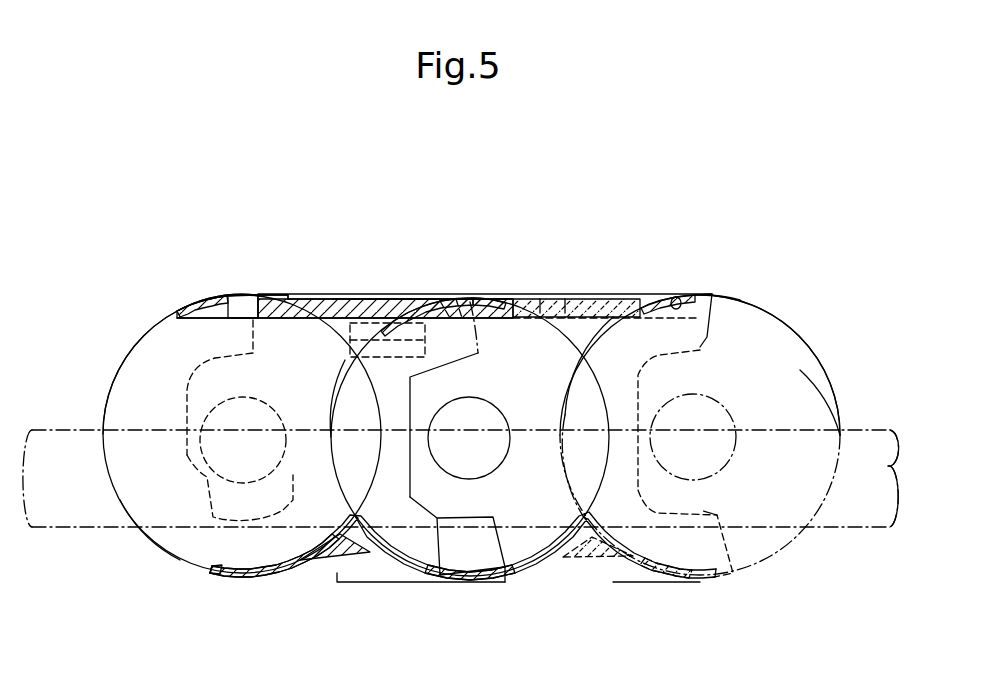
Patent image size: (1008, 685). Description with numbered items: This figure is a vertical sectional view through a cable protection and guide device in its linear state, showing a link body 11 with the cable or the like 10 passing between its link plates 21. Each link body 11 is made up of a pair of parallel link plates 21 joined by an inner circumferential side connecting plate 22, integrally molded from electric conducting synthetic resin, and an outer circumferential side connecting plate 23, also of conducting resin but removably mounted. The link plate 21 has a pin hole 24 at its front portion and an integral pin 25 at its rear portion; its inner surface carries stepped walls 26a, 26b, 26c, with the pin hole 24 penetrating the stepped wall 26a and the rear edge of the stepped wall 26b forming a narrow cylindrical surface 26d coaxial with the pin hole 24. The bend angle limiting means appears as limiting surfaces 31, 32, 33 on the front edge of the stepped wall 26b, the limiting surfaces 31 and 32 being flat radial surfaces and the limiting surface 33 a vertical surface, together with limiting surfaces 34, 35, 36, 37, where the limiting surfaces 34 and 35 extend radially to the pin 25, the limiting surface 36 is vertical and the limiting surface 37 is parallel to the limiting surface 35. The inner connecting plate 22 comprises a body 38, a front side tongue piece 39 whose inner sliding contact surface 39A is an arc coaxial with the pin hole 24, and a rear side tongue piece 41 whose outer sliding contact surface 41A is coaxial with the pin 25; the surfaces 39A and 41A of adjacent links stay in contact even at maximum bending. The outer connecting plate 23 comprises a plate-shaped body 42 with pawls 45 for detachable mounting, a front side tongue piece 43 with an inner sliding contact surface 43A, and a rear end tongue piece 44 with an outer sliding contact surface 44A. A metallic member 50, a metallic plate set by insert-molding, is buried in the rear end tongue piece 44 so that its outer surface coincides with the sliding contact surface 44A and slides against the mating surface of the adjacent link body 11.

The cable or the like 10 is at (80, 427).
The link body 11 is at (133, 349).
The link plate 21 is at (147, 540).
The inner circumferential side connecting plate 22 is at (333, 597).
The outer circumferential side connecting plate 23 is at (336, 300).
The pin hole 24 is at (480, 460).
The pin 25 is at (256, 398).
The stepped wall 26a is at (822, 390).
The stepped wall 26b is at (718, 300).
The stepped wall 26c is at (173, 540).
The narrow cylindrical surface 26d is at (580, 395).
The limiting surface 31 is at (497, 318).
The limiting surface 32 is at (547, 557).
The limiting surface 33 is at (410, 410).
The limiting surface 34 is at (233, 307).
The limiting surface 35 is at (293, 505).
The limiting surface 36 is at (186, 407).
The limiting surface 37 is at (197, 478).
The body 38 is at (360, 548).
The front side tongue piece 39 is at (450, 581).
The sliding contact surface 39A is at (418, 560).
The rear side tongue piece 41 is at (247, 576).
The sliding contact surface 41A is at (230, 575).
The body 42 is at (310, 299).
The front side tongue piece 43 is at (463, 310).
The sliding contact surface 43A is at (452, 307).
The rear end tongue piece 44 is at (257, 317).
The sliding contact surface 44A is at (180, 308).
The pawl 45 is at (350, 338).
The metallic member 50 is at (200, 303).